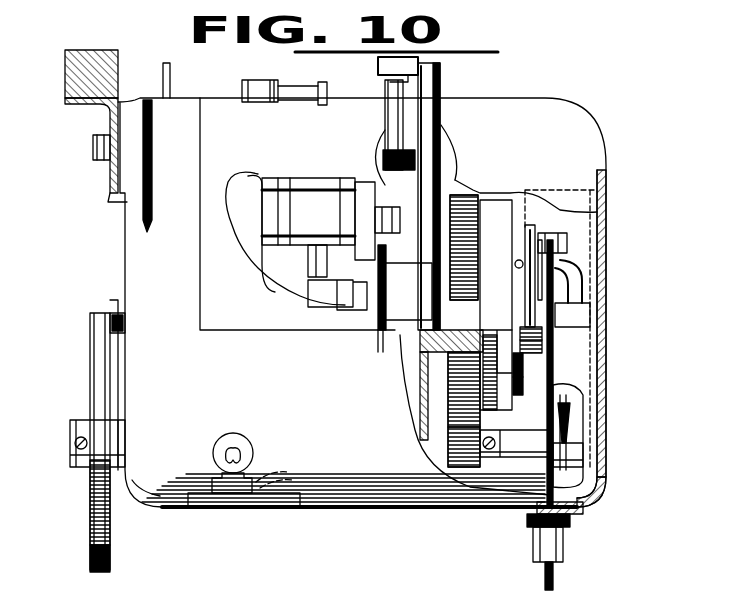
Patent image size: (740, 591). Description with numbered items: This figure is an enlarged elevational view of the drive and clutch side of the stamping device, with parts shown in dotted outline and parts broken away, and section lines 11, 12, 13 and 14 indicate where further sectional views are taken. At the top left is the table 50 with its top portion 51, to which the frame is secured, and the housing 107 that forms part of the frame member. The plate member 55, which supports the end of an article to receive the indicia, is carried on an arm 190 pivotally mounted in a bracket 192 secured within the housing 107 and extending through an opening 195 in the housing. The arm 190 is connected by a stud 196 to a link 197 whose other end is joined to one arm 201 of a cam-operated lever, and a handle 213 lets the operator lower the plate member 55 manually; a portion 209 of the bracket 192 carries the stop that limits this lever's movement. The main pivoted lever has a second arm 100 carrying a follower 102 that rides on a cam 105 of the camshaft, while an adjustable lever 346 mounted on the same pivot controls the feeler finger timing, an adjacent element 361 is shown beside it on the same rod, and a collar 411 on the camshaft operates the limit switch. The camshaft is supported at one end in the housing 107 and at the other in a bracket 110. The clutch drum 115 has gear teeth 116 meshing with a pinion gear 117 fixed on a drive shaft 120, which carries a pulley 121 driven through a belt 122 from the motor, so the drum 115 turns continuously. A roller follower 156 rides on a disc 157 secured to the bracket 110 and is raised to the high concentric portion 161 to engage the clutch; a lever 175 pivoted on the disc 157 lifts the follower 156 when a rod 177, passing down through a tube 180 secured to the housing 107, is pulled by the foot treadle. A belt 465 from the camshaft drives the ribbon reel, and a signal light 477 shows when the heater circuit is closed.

The table 50 is at (98, 122).
The top portion 51 is at (119, 68).
The plate member 55 is at (485, 55).
The second arm 100 is at (250, 240).
The follower 102 is at (358, 200).
The cam 105 is at (350, 298).
The housing 107 is at (350, 505).
The bracket 110 is at (591, 318).
The drum 115 is at (505, 202).
The gear teeth 116 is at (468, 208).
The pinion gear 117 is at (462, 470).
The drive shaft 120 is at (68, 448).
The pulley 121 is at (89, 552).
The belt 122 is at (90, 520).
The follower 156 is at (542, 345).
The disc 157 is at (525, 378).
The high concentric portion 161 is at (535, 225).
The lever 175 is at (560, 258).
The rod 177 is at (545, 576).
The tube 180 is at (532, 538).
The arm 190 is at (378, 70).
The bracket 192 is at (441, 85).
The opening 195 is at (455, 172).
The stud 196 is at (385, 90).
The link 197 is at (383, 147).
The arm 201 is at (373, 182).
The portion 209 is at (400, 325).
The handle 213 is at (380, 345).
The lever 346 is at (242, 88).
The stop collar 361 is at (318, 90).
The collar 411 is at (318, 296).
The belt 465 is at (170, 70).
The signal light 477 is at (256, 458).
The section line 11- 11 is at (626, 554).
The section line 12- 12 is at (366, 372).
The section line 13- 13 is at (626, 404).
The section line 14- 14 is at (626, 479).